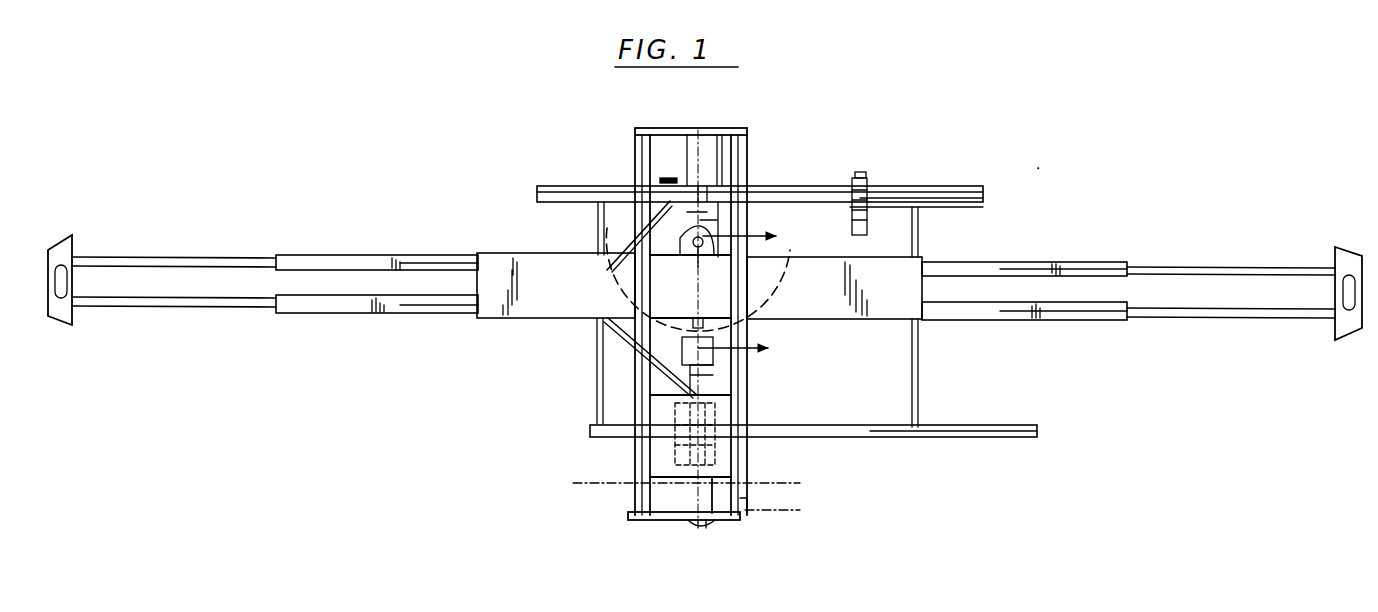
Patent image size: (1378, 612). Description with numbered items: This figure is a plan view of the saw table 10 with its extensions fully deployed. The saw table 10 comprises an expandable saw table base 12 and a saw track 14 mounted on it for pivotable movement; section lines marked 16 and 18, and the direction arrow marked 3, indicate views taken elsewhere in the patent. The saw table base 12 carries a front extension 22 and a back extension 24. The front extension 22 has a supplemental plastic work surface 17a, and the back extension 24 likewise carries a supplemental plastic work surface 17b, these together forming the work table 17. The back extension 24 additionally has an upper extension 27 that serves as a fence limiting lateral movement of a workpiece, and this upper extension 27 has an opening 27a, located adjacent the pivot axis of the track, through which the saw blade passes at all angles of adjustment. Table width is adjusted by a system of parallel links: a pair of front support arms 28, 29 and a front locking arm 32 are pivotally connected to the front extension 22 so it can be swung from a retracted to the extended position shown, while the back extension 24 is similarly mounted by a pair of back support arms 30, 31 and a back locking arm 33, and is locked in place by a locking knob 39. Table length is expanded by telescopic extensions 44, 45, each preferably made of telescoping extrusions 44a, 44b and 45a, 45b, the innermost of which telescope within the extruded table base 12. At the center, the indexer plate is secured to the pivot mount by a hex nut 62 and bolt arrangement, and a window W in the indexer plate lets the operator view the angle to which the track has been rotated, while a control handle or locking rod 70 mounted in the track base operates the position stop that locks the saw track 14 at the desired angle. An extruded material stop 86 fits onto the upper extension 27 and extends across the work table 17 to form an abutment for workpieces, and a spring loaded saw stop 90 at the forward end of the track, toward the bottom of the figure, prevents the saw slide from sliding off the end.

The saw table 10 is at (986, 170).
The saw table base 12 is at (502, 322).
The saw track 14 is at (841, 153).
The section line 16- 16 is at (598, 451).
The work table 17 is at (826, 319).
The supplemental plastic work surface 17a is at (980, 441).
The supplemental plastic work surface 17b is at (983, 202).
The section line 18- 18 is at (713, 517).
The front extension 22 is at (878, 441).
The back extension 24 is at (962, 208).
The upper extension 27 is at (560, 186).
The opening 27a is at (707, 182).
The front support arm 28 is at (592, 400).
The front support arm 29 is at (918, 382).
The back support arm 30 is at (597, 212).
The back support arm 31 is at (912, 232).
The front locking arm 32 is at (632, 335).
The back locking arm 33 is at (627, 243).
The locking knob 39 is at (669, 177).
The telescopic extension 44 is at (332, 254).
The telescoping extrusion 44a is at (420, 255).
The telescoping extrusion 44b is at (207, 256).
The telescopic extension 45 is at (1122, 258).
The telescoping extrusion 45a is at (1055, 262).
The telescoping extrusion 45b is at (1196, 267).
The hex nut 62 is at (748, 322).
The locking rod 70 is at (690, 526).
The material stop 86 is at (870, 181).
The saw stop 90 is at (748, 503).
The section arrow 3 is at (745, 352).
The window W is at (697, 324).